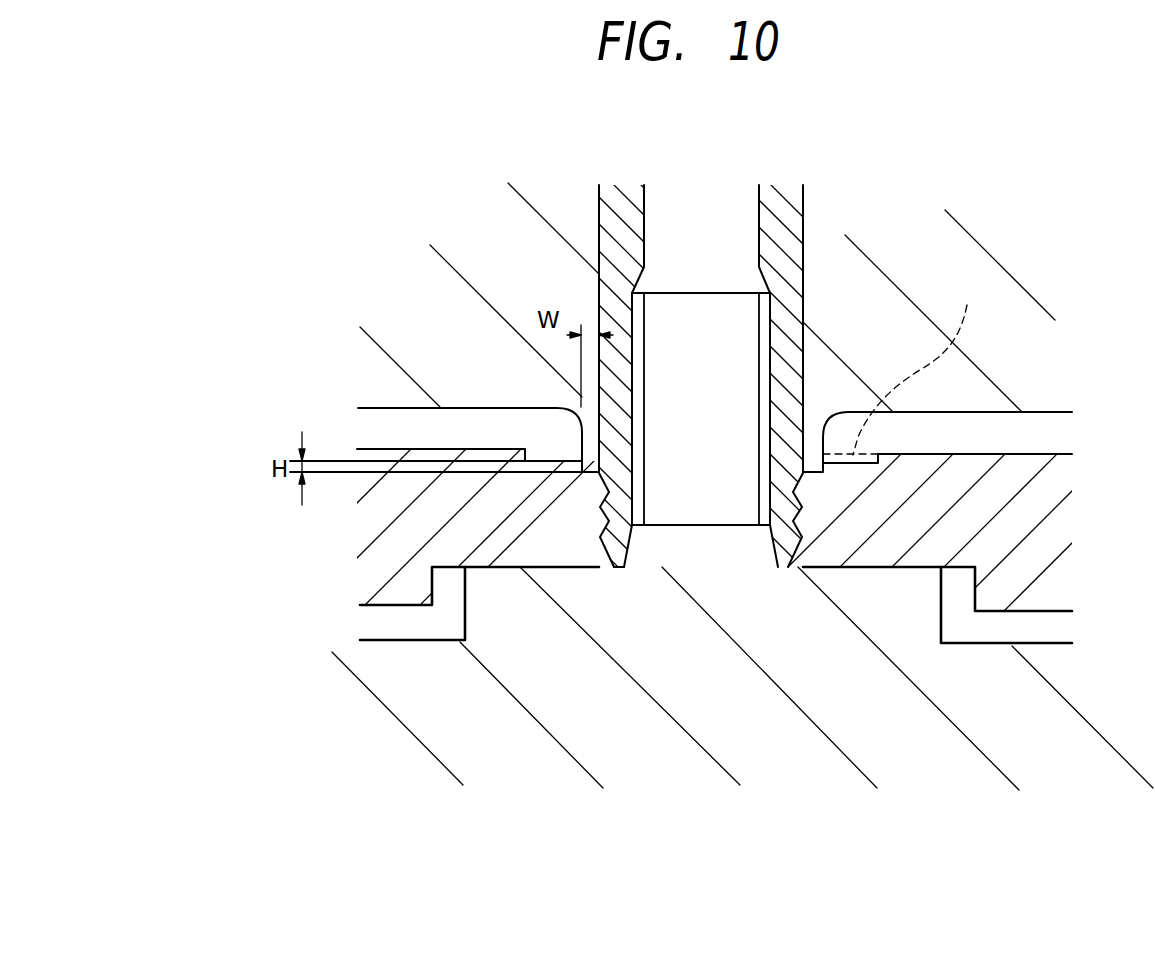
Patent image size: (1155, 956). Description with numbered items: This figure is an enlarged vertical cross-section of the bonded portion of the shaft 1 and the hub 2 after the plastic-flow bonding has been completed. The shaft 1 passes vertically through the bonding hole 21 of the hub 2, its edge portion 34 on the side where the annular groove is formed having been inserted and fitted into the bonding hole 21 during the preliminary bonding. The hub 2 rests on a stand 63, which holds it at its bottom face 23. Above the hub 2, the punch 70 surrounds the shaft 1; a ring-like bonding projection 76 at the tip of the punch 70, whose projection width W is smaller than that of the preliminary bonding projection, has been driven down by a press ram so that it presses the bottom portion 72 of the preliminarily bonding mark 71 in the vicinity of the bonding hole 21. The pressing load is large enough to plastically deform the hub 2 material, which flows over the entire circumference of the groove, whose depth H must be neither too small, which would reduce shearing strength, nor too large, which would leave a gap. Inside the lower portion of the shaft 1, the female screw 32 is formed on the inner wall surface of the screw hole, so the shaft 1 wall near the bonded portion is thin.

The shaft 1 is at (803, 197).
The hub 2 is at (1025, 460).
The bonding hole 21 is at (800, 559).
The bottom face 23 is at (573, 582).
The female screw 32 is at (642, 472).
The edge portion 34 is at (600, 556).
The stand 63 is at (927, 598).
The punch 70 is at (550, 248).
The preliminarily bonding mark 71 is at (857, 478).
The bottom portion 72 is at (583, 480).
The ring-like bonding projection 76 is at (813, 458).